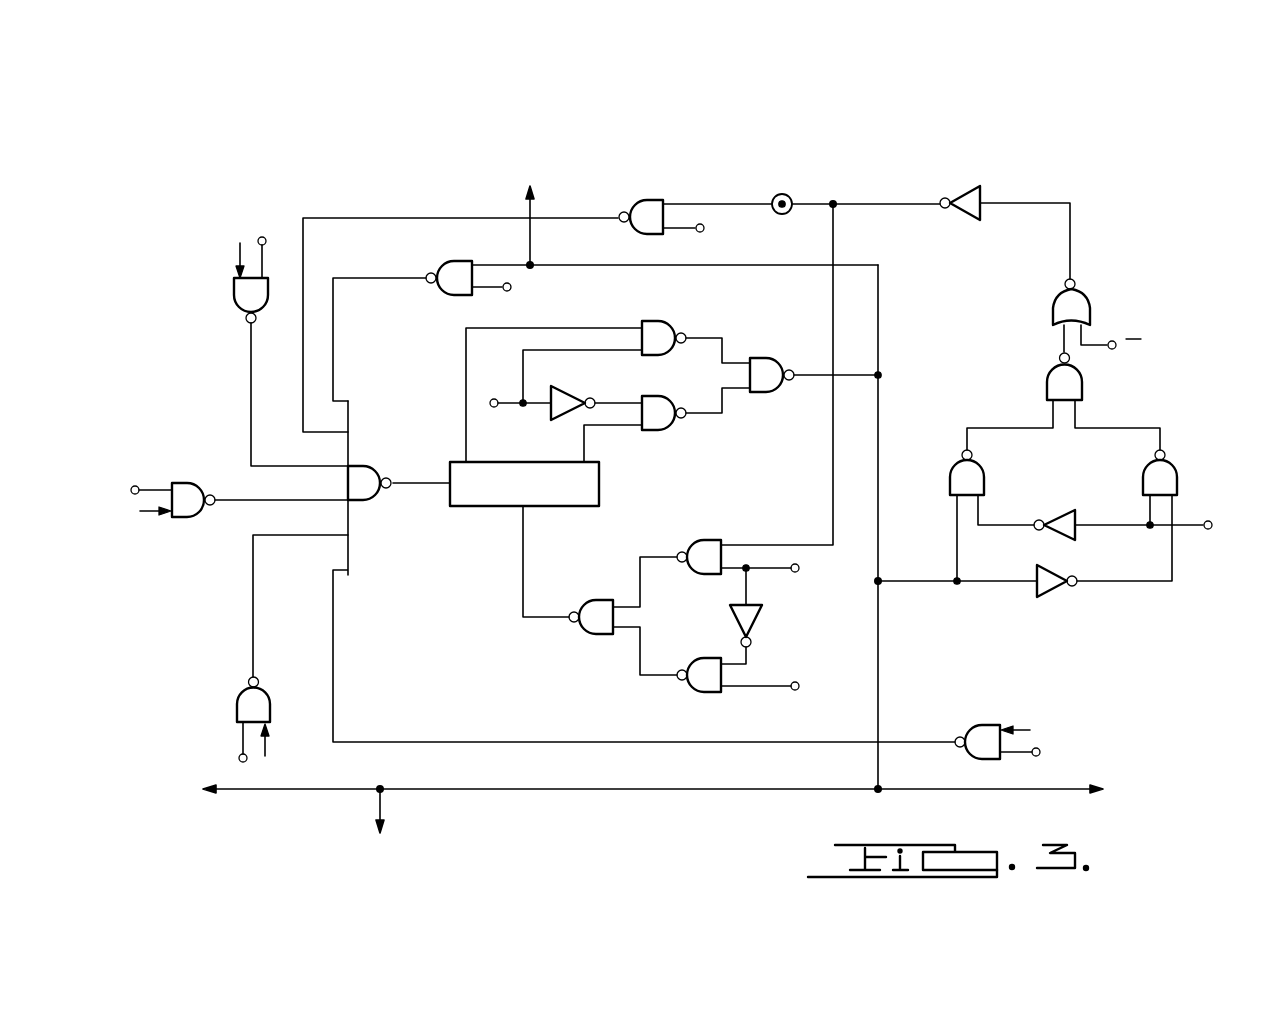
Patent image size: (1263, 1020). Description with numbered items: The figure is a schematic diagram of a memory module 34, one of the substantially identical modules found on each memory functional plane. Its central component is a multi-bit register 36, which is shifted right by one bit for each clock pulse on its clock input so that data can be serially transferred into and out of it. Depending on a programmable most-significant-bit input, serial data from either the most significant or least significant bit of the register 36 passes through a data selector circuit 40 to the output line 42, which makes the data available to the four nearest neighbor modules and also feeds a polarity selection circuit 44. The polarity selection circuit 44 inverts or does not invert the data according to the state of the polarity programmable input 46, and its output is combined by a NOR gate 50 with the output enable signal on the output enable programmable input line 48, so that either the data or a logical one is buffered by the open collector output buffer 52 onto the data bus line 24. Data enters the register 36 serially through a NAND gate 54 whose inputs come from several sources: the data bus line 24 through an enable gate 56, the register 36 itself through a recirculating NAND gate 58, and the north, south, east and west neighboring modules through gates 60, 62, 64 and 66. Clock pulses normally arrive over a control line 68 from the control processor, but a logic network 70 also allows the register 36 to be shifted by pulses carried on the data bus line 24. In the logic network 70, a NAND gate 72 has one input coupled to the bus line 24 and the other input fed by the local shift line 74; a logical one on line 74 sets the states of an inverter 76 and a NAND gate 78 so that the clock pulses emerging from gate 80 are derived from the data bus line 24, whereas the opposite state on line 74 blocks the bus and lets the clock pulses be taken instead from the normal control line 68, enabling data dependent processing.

The data bus line 24 is at (784, 194).
The memory module 34 is at (175, 227).
The multi-bit register 36 is at (600, 478).
The data selector circuit 40 is at (738, 328).
The output line 42 is at (881, 377).
The polarity selection circuit 44 is at (1155, 403).
The POL programmable input 46 is at (1212, 517).
The 0 programmable input line 48 is at (1114, 340).
The NOR gate 50 is at (1060, 300).
The open collector output buffer 52 is at (968, 190).
The NAND gate 54 is at (368, 464).
The enable gate 56 is at (656, 198).
The recirculating NAND gate 58 is at (447, 262).
The gate 60 is at (262, 700).
The gate 62 is at (236, 306).
The gate 64 is at (188, 488).
The gate 66 is at (975, 726).
The control line 68 is at (795, 700).
The logic network 70 is at (714, 608).
The NAND gate 72 is at (695, 543).
The LOCAL SHIFT line 74 is at (802, 570).
The inverter 76 is at (738, 616).
The NAND gate 78 is at (700, 690).
The gate 80 is at (594, 628).